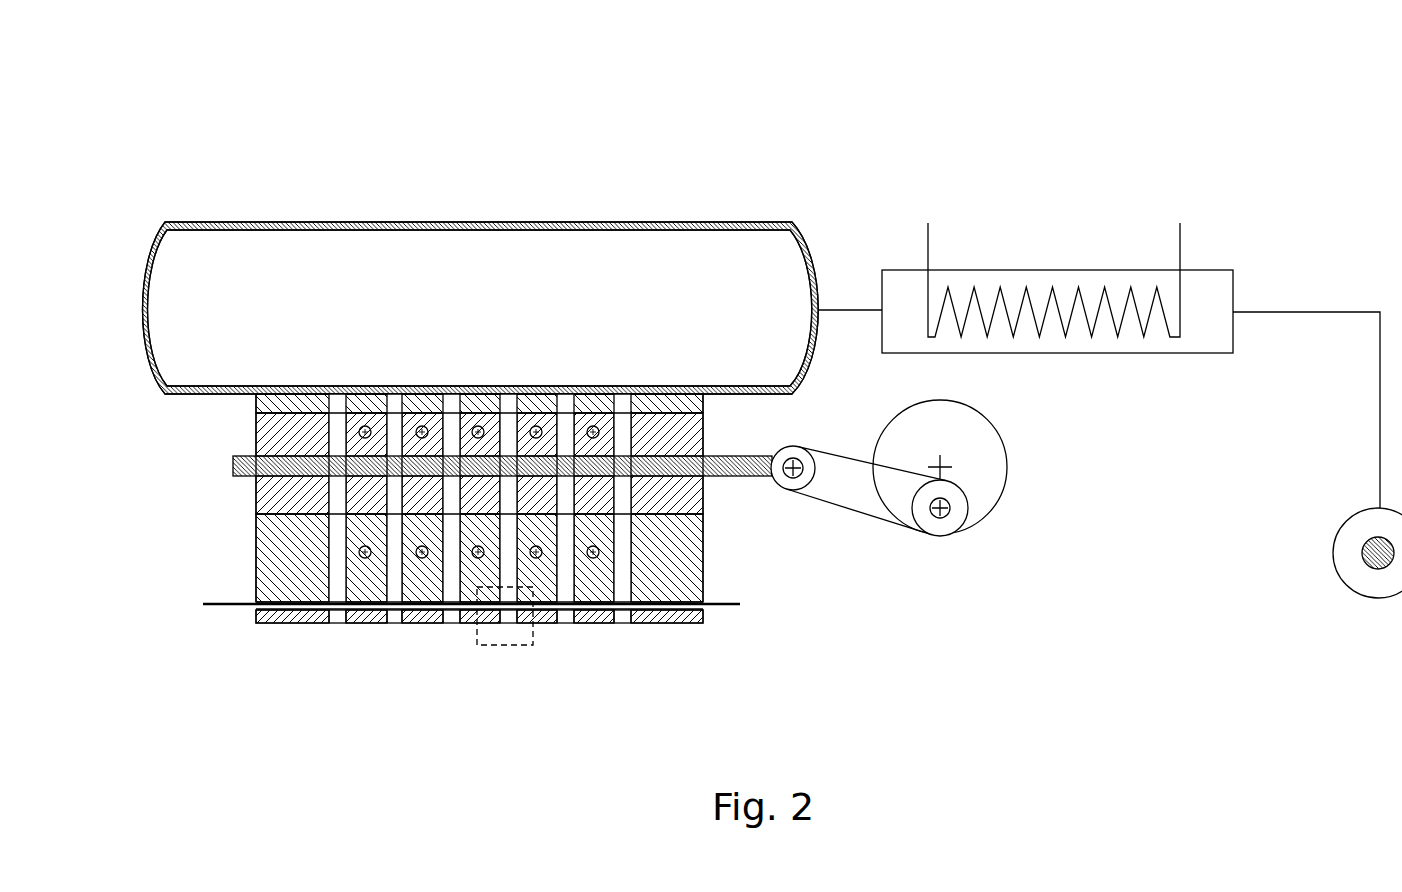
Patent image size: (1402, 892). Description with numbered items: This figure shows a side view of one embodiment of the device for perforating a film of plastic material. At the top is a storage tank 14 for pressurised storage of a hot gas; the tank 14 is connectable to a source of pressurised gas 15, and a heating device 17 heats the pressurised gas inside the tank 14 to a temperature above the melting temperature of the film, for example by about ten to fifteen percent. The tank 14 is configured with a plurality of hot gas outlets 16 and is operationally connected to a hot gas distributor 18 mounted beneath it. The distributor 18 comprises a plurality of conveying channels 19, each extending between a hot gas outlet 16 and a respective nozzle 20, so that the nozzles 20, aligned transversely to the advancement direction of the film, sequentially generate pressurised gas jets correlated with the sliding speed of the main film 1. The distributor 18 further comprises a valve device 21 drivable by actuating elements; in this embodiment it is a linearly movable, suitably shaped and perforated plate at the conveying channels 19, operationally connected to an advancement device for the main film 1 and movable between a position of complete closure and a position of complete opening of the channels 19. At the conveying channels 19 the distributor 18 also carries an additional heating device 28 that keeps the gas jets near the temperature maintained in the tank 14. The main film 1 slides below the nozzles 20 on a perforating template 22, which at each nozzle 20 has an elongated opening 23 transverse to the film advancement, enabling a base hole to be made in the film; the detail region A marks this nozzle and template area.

The main film 1 is at (203, 606).
The storage tank 14 is at (218, 250).
The source of pressurised gas 15 is at (1345, 560).
The hot gas outlets 16 is at (335, 385).
The heating device 17 is at (1197, 282).
The hot gas distributor 18 is at (237, 505).
The conveying channels 19 is at (340, 432).
The nozzle 20 is at (615, 605).
The valve device 21 is at (765, 480).
The perforating template 22 is at (288, 623).
The elongated opening 23 is at (395, 620).
The additional heating device 28 is at (605, 552).
The detail region A is at (533, 647).